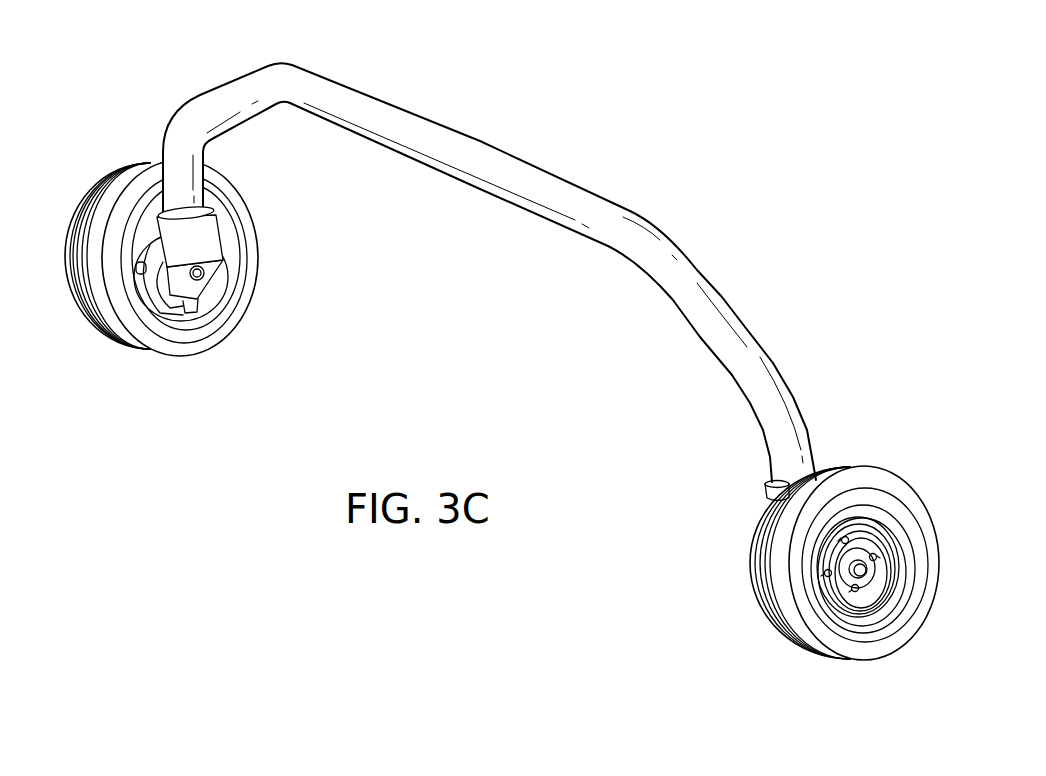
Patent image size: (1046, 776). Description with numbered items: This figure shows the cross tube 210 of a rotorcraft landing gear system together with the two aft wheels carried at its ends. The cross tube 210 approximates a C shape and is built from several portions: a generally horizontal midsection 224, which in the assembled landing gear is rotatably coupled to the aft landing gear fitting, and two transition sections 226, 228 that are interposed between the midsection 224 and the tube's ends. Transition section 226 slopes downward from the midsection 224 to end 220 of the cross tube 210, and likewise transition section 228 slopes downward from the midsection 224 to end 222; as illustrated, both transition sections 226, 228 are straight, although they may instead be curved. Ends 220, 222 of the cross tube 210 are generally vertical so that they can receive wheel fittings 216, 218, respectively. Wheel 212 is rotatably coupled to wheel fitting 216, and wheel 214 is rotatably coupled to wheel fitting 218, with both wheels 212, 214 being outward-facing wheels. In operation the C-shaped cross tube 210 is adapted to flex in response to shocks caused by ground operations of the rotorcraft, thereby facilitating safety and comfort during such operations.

The cross tube 210 is at (489, 262).
The wheel 212 is at (907, 634).
The wheel 214 is at (143, 356).
The wheel fitting 216 is at (767, 500).
The wheel fitting 218 is at (215, 272).
The end of cross tube 220 is at (767, 452).
The end of cross tube 222 is at (210, 198).
The midsection 224 is at (463, 138).
The transition section 226 is at (720, 294).
The transition section 228 is at (223, 85).